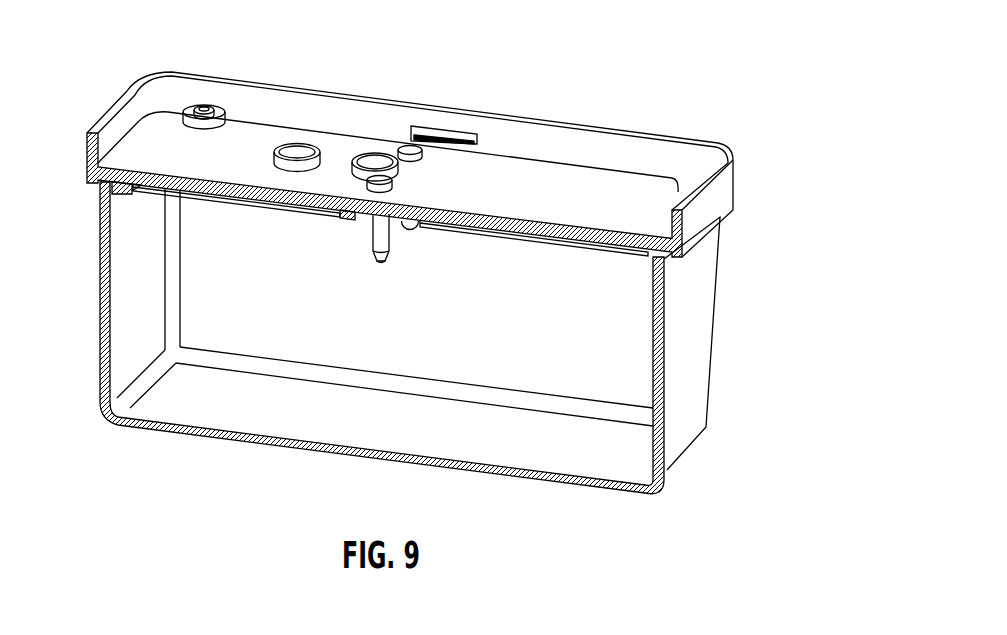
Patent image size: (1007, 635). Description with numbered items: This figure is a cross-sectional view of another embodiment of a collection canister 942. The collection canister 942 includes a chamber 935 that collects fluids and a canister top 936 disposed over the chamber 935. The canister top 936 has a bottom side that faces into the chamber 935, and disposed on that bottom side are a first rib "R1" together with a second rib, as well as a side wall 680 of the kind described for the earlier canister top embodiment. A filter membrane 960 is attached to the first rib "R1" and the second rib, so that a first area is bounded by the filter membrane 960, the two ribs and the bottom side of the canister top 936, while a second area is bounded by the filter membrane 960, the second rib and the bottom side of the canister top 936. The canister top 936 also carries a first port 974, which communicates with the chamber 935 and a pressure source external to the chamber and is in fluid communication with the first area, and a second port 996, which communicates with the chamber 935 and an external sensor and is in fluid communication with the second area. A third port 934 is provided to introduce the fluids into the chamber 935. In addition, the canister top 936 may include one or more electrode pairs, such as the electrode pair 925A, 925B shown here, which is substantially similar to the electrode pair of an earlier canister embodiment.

The collection canister 942 is at (570, 40).
The canister top 936 is at (535, 175).
The chamber 935 is at (152, 300).
The third port 934 is at (206, 102).
The first port 974 is at (294, 148).
The second port 996 is at (377, 160).
The electrode 925A is at (383, 272).
The electrode 925B is at (417, 236).
The filter membrane 960 is at (206, 201).
The side wall 680 is at (121, 202).
The first rib R1 is at (131, 198).